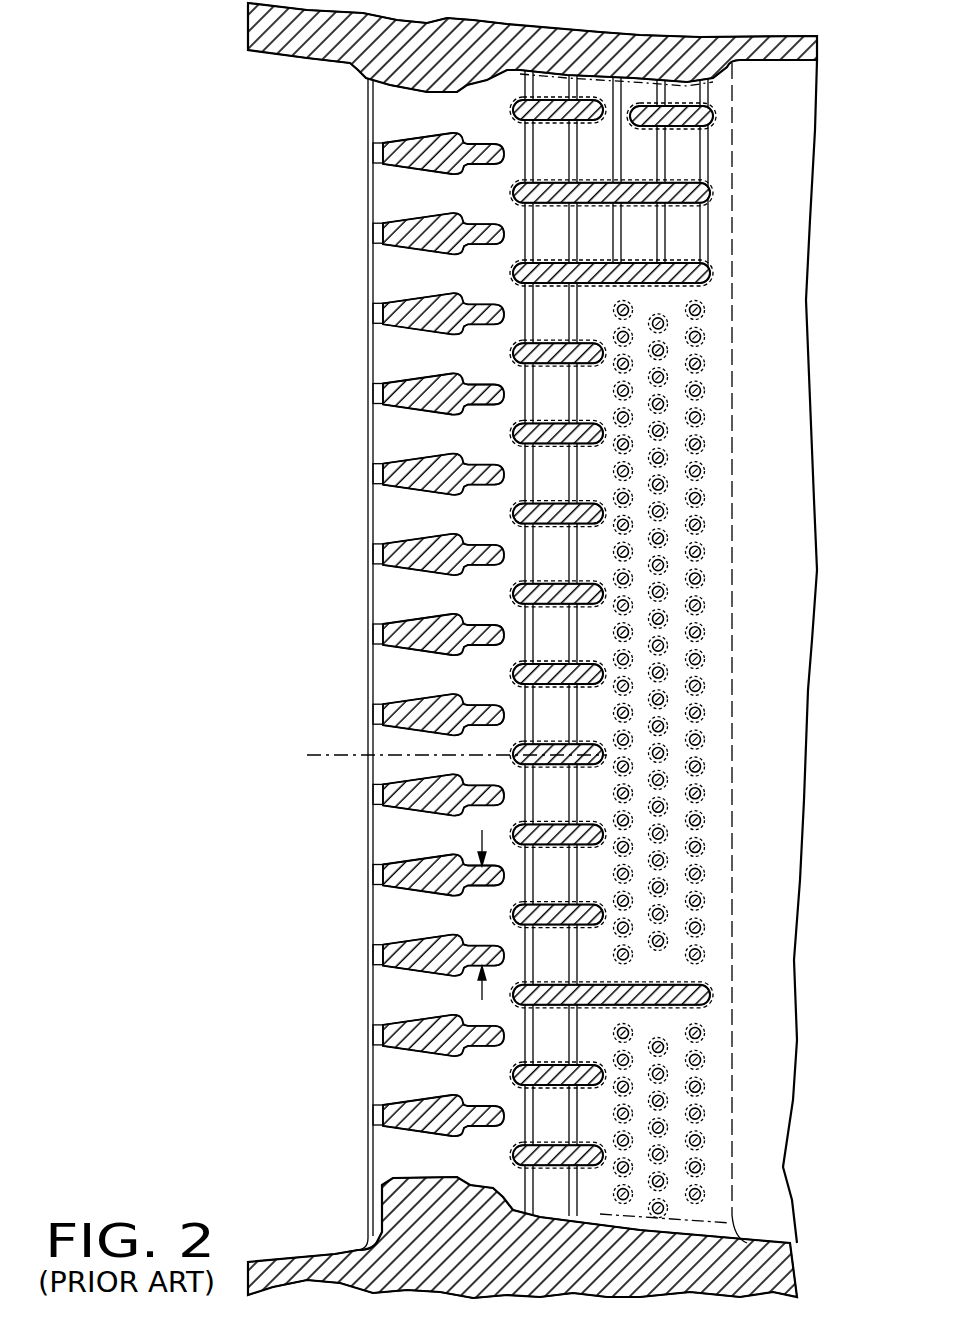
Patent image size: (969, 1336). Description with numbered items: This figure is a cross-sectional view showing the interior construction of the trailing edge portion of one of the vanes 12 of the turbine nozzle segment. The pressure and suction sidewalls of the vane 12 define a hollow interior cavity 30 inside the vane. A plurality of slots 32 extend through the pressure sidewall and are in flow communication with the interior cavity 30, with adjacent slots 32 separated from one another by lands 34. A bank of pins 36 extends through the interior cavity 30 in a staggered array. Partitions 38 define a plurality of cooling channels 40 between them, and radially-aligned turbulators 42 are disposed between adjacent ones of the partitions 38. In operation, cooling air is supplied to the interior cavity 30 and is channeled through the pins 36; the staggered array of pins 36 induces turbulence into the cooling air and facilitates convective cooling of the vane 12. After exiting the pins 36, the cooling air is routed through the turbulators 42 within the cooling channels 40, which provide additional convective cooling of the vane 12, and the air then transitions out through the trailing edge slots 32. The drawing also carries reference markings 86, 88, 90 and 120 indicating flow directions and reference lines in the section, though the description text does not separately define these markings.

The vane 12 is at (245, 210).
The interior cavity 30 is at (478, 105).
The slots 32 is at (388, 634).
The lands 34 is at (360, 412).
The pins 36 is at (706, 848).
The partitions 38 is at (606, 500).
The cooling channels 40 is at (652, 632).
The turbulators 42 is at (593, 715).
The cooling air flow 86 is at (507, 1180).
The hot gas flow 88 is at (392, 1170).
The centerline 90 is at (327, 755).
The liner boundary line 120 is at (718, 535).